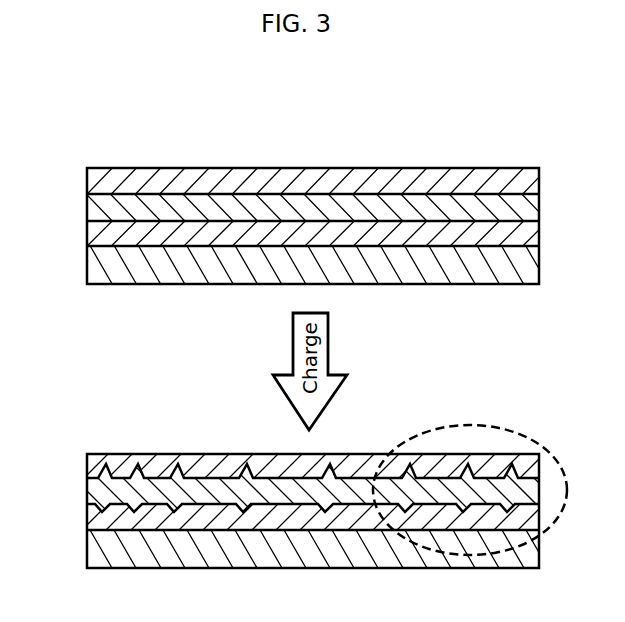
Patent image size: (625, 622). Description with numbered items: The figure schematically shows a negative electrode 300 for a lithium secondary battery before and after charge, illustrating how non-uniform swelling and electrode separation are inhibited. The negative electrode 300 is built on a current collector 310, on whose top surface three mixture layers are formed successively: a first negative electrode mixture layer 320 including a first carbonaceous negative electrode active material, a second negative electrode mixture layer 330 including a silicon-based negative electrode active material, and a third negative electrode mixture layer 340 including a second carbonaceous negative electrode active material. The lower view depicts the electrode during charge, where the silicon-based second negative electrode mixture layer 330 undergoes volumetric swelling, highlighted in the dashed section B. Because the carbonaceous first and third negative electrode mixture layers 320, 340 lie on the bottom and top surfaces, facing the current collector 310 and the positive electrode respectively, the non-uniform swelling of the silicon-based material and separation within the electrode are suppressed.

The negative electrode 300 is at (108, 130).
The third negative electrode mixture layer 340 is at (91, 181).
The second negative electrode mixture layer 330 is at (91, 206).
The first negative electrode mixture layer 320 is at (91, 232).
The current collector 310 is at (91, 262).
The highlighted section B is at (504, 421).